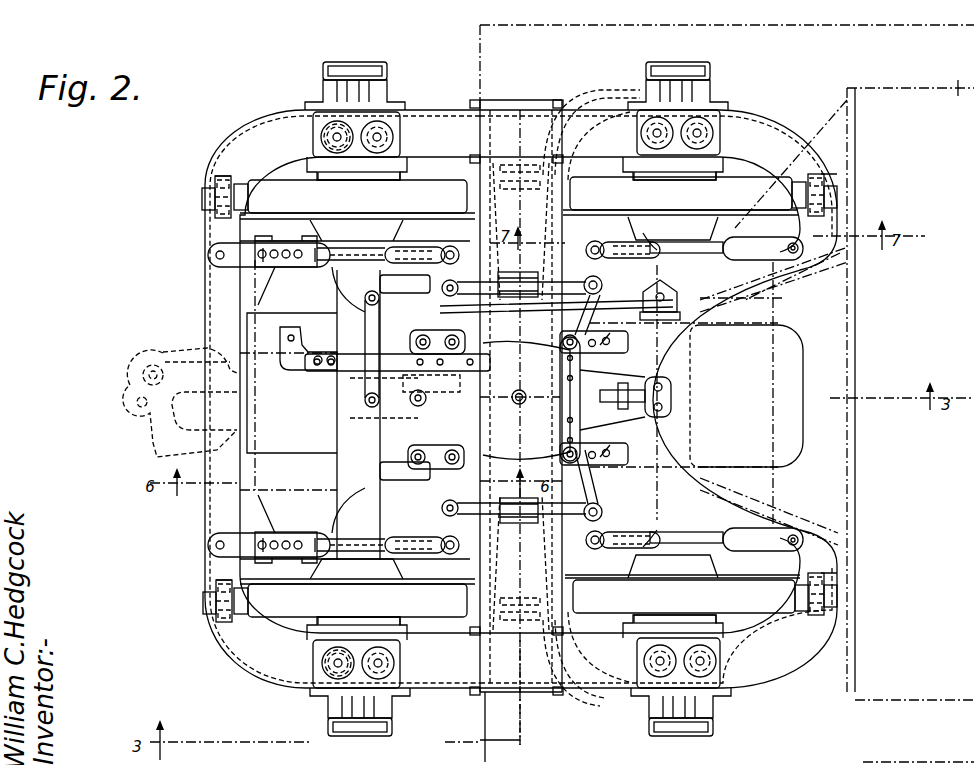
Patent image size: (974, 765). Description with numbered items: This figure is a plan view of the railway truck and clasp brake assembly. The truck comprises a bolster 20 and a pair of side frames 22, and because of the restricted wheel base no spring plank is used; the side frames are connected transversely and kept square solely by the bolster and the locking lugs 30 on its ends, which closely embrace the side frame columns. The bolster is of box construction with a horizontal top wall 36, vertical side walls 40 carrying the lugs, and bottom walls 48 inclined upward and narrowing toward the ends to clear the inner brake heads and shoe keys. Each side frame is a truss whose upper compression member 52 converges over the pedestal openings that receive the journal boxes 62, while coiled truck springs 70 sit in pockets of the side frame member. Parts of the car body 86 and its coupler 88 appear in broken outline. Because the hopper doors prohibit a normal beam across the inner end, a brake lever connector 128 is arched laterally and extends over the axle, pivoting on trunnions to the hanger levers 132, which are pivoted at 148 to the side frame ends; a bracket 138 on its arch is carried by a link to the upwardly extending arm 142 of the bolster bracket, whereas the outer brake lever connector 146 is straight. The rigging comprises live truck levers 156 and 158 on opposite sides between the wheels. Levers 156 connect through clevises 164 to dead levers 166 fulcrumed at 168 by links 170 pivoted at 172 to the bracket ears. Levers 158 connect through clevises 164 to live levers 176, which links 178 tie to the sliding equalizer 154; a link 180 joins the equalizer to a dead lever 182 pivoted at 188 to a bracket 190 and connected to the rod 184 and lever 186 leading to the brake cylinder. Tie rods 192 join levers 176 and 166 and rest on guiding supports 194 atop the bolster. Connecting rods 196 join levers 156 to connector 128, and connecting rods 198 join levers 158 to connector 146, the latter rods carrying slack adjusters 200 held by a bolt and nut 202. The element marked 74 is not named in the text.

The bolster 20 is at (520, 387).
The side frames 22 is at (440, 128).
The locking lugs 30 is at (485, 102).
The top wall 36 is at (516, 431).
The vertical side walls 40 is at (578, 102).
The bottom walls 48 is at (521, 454).
The upper compression member 52 is at (612, 108).
The journal boxes 62 is at (710, 80).
The coiled truck springs 70 is at (382, 122).
The roller 74 is at (330, 100).
The car body 86 is at (727, 393).
The coupler 88 is at (182, 362).
The brake lever connector 128 is at (783, 300).
The hanger levers 132 is at (202, 197).
The bracket 138 is at (732, 396).
The upwardly extending arm 142 is at (598, 410).
The brake lever connector 146 is at (213, 520).
The pivot 148 is at (213, 185).
The equalizer 154 is at (410, 420).
The live truck levers 156 is at (648, 245).
The live truck levers 158 is at (408, 230).
The clevises 164 is at (430, 248).
The dead levers 166 is at (603, 288).
The fulcrum 168 is at (596, 352).
The links 170 is at (600, 330).
The pivotal connection 172 is at (558, 350).
The live levers 176 is at (428, 312).
The links 178 is at (368, 458).
The link 180 is at (345, 418).
The dead lever 182 is at (364, 316).
The rod 184 is at (556, 317).
The lever 186 is at (665, 282).
The pivot 188 is at (350, 392).
The bracket 190 is at (322, 372).
The tie rods 192 is at (518, 401).
The guiding supports 194 is at (530, 297).
The connecting rods 196 is at (740, 236).
The connecting rods 198 is at (316, 530).
The slack adjusters 200 is at (296, 400).
The holding bolt and nut 202 is at (280, 240).